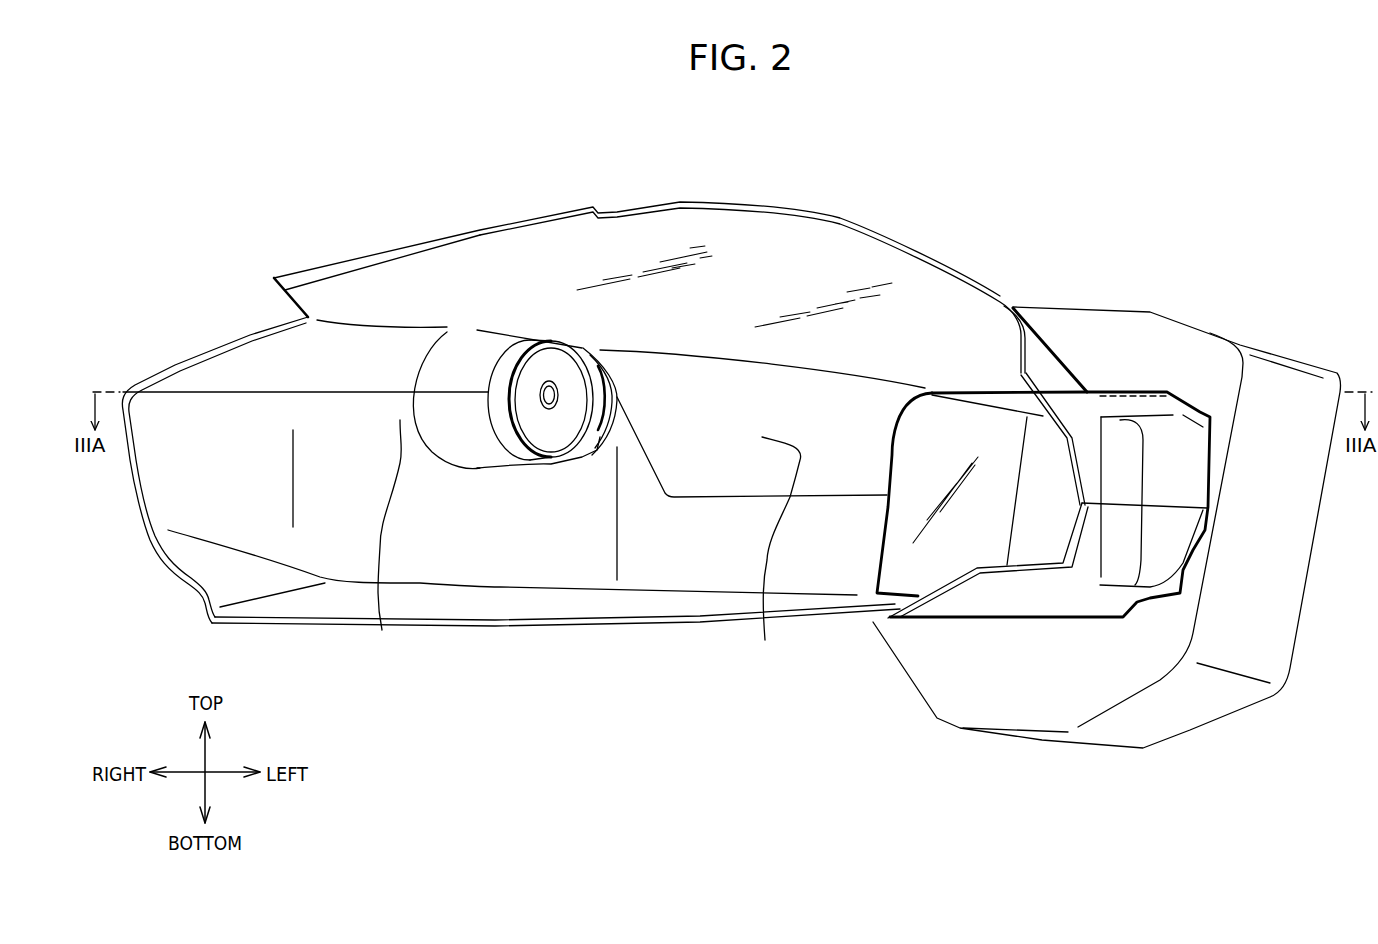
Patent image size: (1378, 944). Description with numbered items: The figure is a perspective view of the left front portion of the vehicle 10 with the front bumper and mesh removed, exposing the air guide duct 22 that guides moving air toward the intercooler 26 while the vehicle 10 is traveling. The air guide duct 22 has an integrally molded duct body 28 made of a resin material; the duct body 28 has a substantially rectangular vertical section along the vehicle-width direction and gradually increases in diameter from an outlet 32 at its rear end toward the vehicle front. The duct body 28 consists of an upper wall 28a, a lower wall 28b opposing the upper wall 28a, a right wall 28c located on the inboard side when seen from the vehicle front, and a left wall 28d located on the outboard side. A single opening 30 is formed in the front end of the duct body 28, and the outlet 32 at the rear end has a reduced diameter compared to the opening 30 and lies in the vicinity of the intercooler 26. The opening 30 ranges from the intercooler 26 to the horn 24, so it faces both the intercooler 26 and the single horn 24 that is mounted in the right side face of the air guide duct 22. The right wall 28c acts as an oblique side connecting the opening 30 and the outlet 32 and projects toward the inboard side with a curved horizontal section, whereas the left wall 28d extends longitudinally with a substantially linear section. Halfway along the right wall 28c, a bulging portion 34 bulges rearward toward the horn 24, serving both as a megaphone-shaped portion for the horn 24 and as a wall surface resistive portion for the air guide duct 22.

The vehicle 10 is at (336, 186).
The air guide duct 22 is at (567, 651).
The horn 24 is at (550, 362).
The intercooler 26 is at (1198, 321).
The duct body 28 is at (448, 630).
The upper wall 28a is at (708, 203).
The lower wall 28b is at (662, 630).
The right wall 28c is at (131, 482).
The left wall 28d is at (1083, 424).
The opening 30 is at (293, 622).
The outlet 32 is at (988, 441).
The bulging portion 34 is at (441, 455).